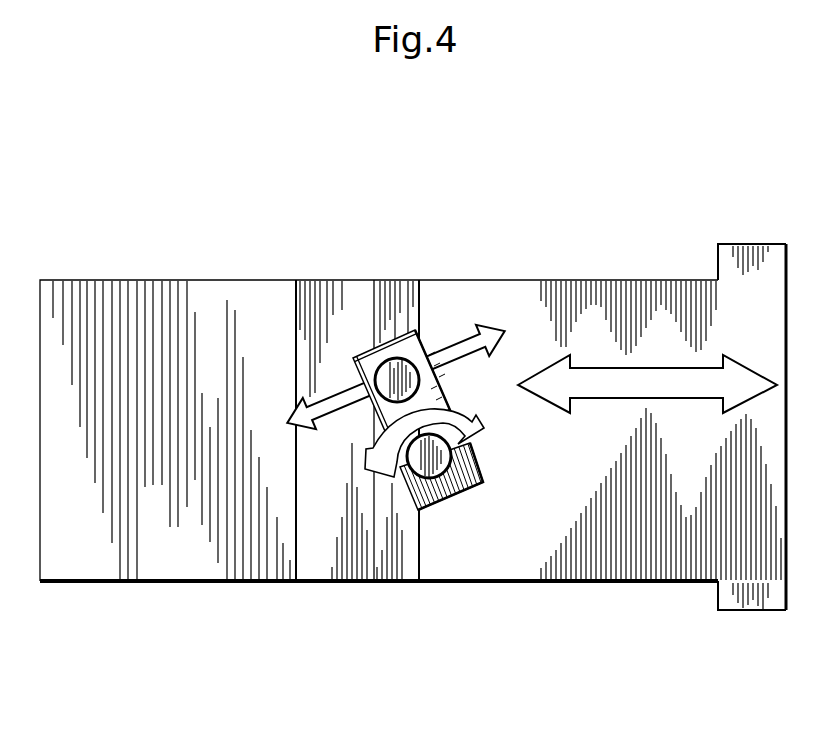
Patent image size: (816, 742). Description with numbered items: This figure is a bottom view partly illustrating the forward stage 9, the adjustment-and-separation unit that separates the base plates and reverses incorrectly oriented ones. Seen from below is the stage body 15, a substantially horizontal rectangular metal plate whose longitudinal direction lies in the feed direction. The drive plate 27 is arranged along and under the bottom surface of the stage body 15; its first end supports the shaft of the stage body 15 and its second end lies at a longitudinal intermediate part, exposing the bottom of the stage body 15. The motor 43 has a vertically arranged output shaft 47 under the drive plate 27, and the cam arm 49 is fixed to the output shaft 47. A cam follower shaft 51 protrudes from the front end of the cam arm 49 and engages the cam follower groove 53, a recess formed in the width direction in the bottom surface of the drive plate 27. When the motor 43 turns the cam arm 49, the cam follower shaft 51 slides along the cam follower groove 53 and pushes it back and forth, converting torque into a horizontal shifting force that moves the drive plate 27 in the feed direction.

The forward stage 9 is at (683, 203).
The stage body 15 is at (261, 279).
The drive plate 27 is at (561, 295).
The motor 43 is at (410, 562).
The output shaft 47 is at (436, 482).
The cam arm 49 is at (484, 462).
The cam follower shaft 51 is at (403, 373).
The cam follower groove 53 is at (397, 300).